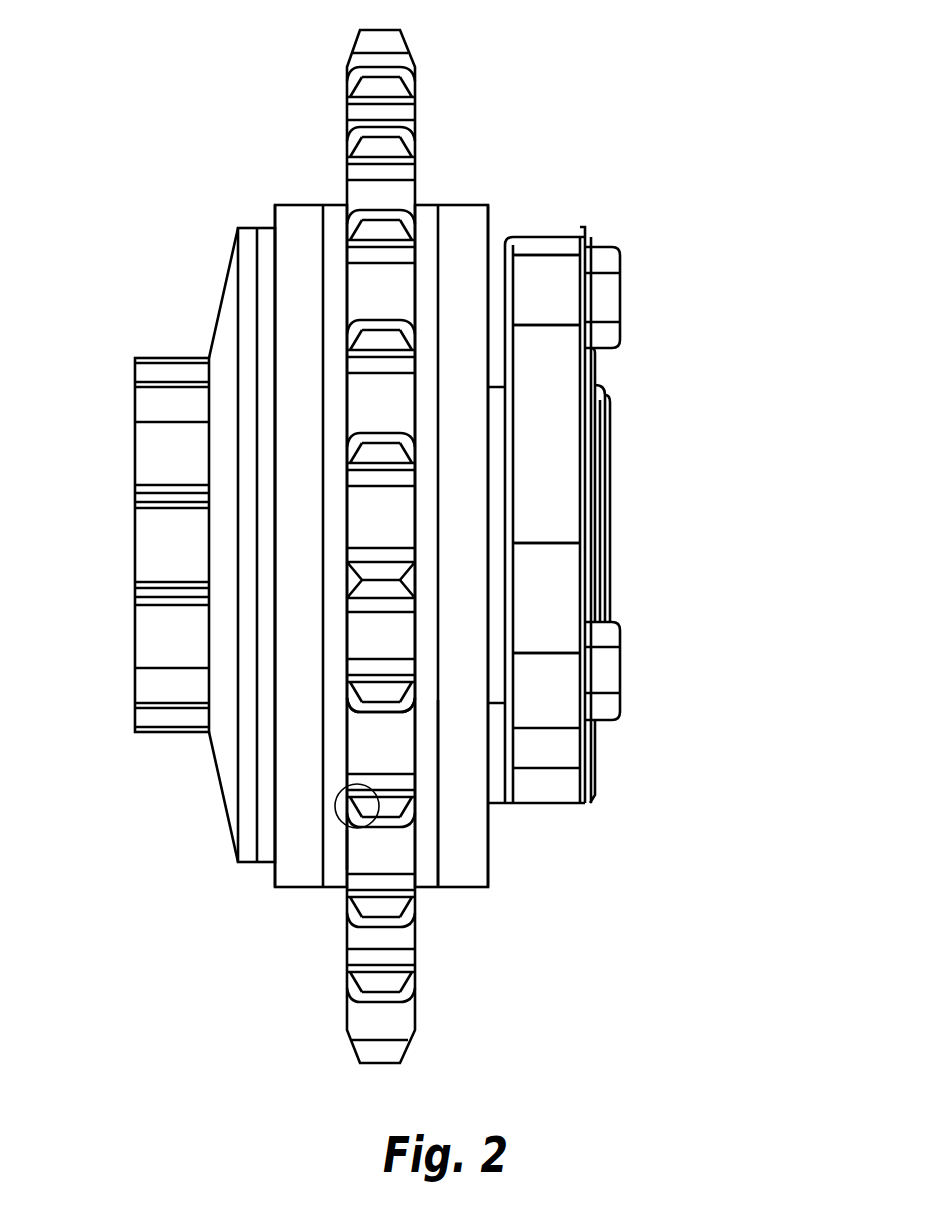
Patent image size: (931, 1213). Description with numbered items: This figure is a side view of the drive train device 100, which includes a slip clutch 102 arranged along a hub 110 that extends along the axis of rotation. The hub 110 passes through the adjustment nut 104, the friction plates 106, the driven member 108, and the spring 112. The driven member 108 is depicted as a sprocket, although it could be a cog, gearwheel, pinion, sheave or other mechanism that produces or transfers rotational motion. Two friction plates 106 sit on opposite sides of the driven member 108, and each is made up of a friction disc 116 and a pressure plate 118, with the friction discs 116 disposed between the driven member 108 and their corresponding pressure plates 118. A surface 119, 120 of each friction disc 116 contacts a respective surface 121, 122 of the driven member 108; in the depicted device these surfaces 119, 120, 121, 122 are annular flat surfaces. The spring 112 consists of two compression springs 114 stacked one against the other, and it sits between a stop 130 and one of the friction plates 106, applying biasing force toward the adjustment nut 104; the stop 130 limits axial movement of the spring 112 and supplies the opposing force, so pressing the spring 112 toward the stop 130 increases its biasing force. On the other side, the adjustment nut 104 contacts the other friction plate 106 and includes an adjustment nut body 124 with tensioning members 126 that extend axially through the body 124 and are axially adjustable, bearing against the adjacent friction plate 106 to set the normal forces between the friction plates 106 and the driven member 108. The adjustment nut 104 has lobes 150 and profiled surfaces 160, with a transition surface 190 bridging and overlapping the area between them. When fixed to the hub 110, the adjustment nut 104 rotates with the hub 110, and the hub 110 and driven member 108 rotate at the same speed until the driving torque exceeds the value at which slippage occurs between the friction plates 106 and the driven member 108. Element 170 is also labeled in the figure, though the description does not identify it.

The drive train device 100 is at (697, 113).
The slip clutch 102 is at (745, 212).
The adjustment nut 104 is at (548, 458).
The friction plates 106 is at (297, 828).
The driven member 108 is at (385, 85).
The hub 110 is at (610, 562).
The spring 112 is at (227, 345).
The compression springs 114 is at (267, 258).
The friction discs 116 is at (333, 207).
The pressure plates 118 is at (303, 218).
The surface of friction disc 119 is at (343, 783).
The surface of friction disc 120 is at (410, 745).
The surface of driven member 121 is at (347, 847).
The surface of driven member 122 is at (420, 842).
The adjustment nut body 124 is at (553, 372).
The tensioning members 126 is at (605, 272).
The stop 130 is at (153, 408).
The lobes 150 is at (588, 230).
The profiled surfaces 160 is at (550, 413).
The washer 170 is at (552, 507).
The transition surface 190 is at (563, 293).